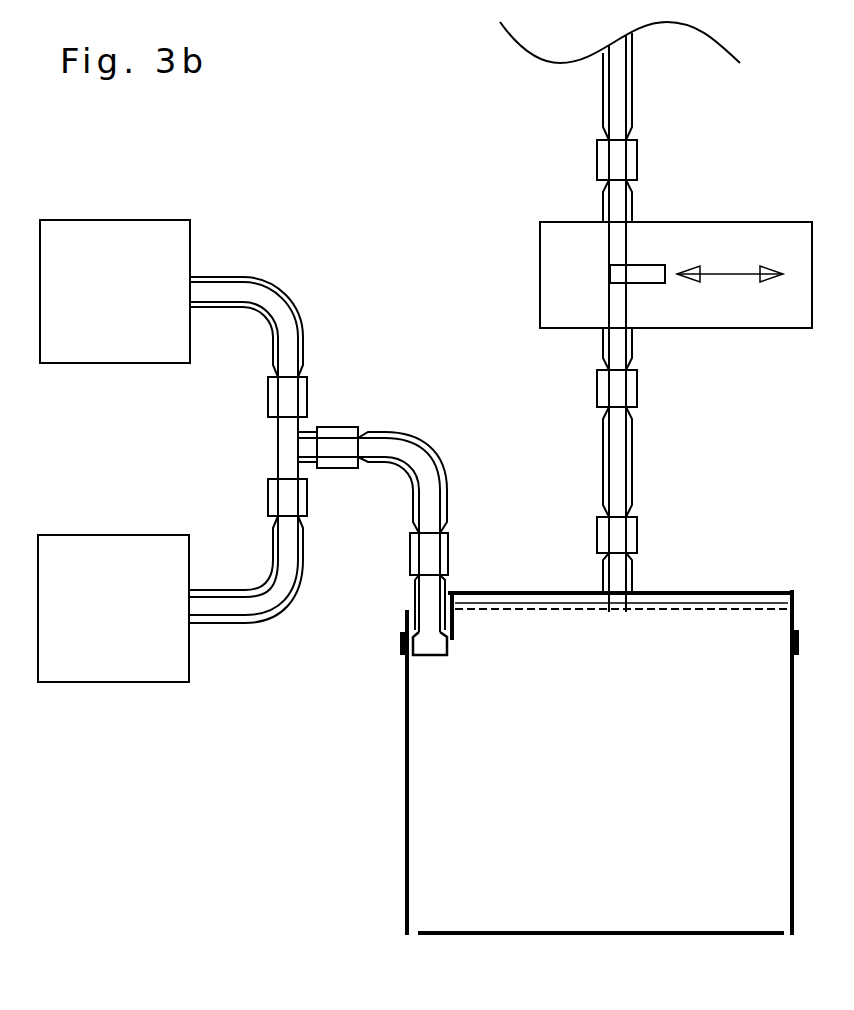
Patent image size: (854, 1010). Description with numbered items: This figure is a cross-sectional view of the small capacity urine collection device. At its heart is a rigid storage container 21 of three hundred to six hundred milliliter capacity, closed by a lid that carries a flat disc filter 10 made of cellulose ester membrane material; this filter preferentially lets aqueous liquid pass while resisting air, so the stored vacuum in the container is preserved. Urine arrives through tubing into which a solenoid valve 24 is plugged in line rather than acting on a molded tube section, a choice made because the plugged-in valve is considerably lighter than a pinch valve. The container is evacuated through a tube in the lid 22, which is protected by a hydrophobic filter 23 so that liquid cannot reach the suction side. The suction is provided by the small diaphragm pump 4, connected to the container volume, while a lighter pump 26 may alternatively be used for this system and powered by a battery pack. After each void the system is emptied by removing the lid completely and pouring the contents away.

The small diaphragm pump 4 is at (113, 608).
The flat disc filter 10 is at (648, 606).
The rigid storage container 21 is at (407, 795).
The tube in the lid 22 is at (430, 563).
The hydrophobic filter 23 is at (428, 655).
The solenoid valve 24 is at (676, 275).
The lighter pump 26 is at (115, 291).